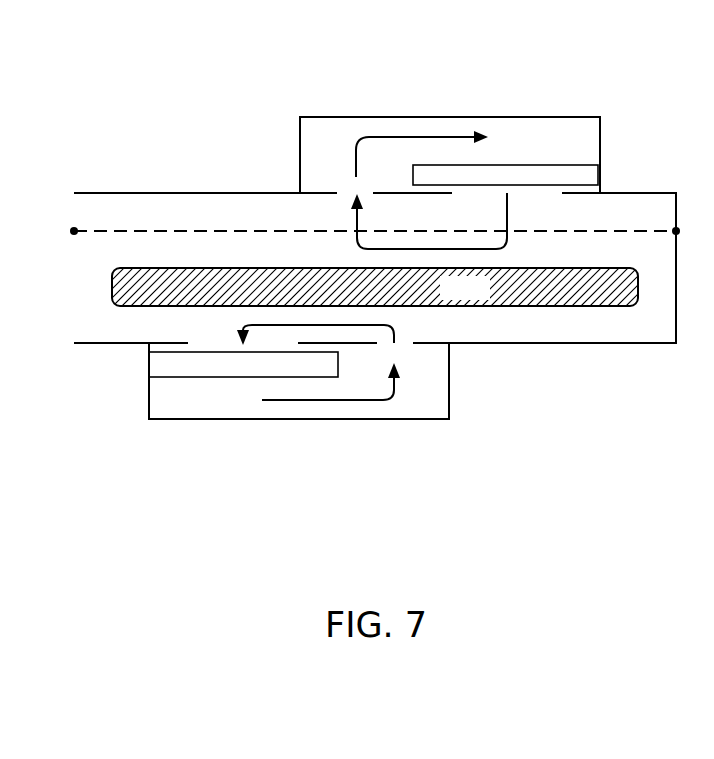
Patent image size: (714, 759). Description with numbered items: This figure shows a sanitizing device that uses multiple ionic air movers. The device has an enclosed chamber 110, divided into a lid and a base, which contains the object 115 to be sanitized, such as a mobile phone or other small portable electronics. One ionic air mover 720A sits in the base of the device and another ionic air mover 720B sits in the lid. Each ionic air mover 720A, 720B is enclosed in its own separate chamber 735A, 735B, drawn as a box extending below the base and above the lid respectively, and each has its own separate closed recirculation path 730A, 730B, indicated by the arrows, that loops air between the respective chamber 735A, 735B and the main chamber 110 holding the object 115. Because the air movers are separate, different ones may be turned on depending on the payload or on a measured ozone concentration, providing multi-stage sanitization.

The enclosed chamber 110 is at (345, 268).
The object to be sanitized 115 is at (362, 286).
The ionic air mover 720A is at (243, 364).
The ionic air mover 720B is at (505, 175).
The closed recirculation path 730A is at (396, 385).
The closed recirculation path 730B is at (355, 162).
The chamber 735A is at (375, 419).
The chamber 735B is at (342, 117).